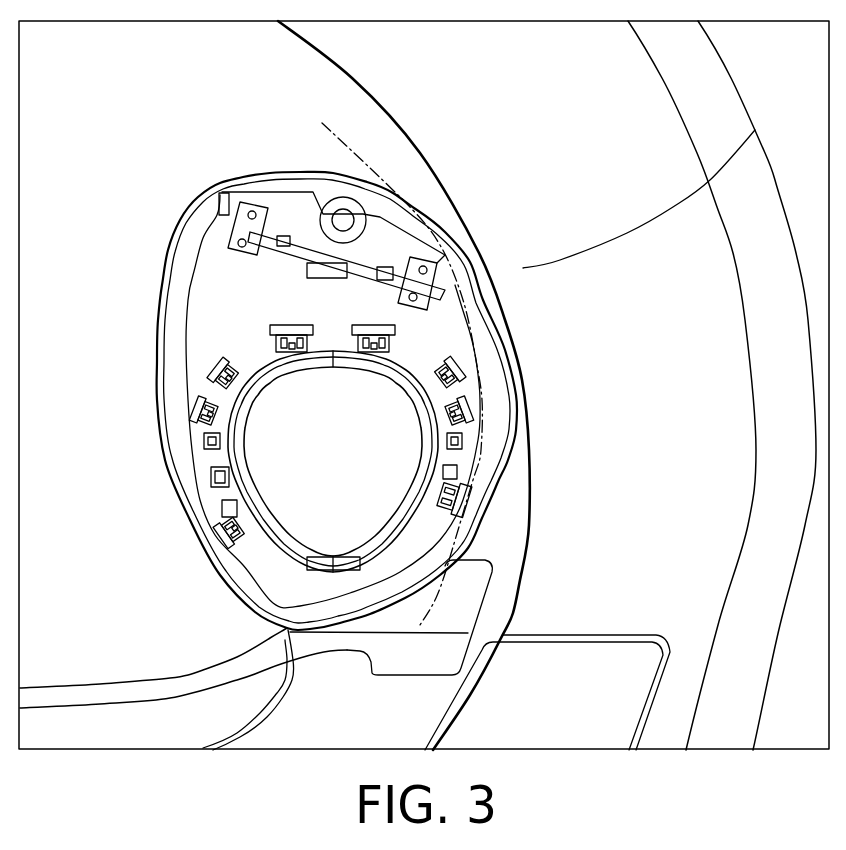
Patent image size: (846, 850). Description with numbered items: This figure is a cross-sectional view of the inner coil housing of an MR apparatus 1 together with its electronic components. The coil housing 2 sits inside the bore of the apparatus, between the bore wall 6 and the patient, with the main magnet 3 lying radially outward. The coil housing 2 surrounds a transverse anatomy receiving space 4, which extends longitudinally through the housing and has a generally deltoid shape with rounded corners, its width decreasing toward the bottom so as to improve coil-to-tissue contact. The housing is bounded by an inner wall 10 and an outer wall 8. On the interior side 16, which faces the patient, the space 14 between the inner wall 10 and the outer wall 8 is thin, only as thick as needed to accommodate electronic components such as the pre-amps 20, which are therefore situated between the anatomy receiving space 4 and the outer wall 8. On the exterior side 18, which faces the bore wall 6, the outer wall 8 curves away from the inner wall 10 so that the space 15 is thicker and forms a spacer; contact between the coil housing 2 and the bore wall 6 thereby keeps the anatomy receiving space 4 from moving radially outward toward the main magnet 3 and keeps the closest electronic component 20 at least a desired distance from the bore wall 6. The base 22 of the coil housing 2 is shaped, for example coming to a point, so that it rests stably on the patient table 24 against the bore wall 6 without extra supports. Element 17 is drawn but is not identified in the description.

The MR apparatus 1 is at (796, 72).
The coil housing 2 is at (160, 231).
The main magnet 3 is at (566, 116).
The anatomy receiving space 4 is at (343, 474).
The bore wall 6 is at (478, 231).
The outer wall 8 is at (161, 467).
The inner wall 10 is at (220, 458).
The space 14 is at (200, 428).
The space 15 is at (469, 430).
The interior side 16 is at (200, 383).
The mounting bracket 17 is at (282, 300).
The exterior side 18 is at (466, 383).
The pre-amps 20 is at (455, 507).
The base 22 is at (284, 630).
The patient table 24 is at (85, 737).